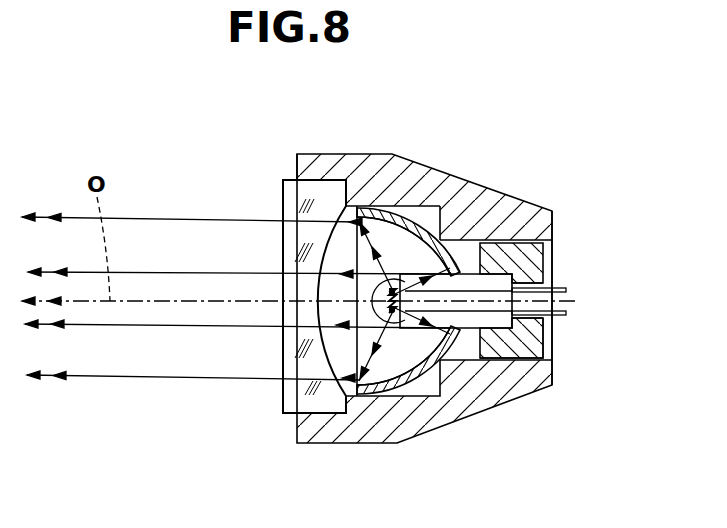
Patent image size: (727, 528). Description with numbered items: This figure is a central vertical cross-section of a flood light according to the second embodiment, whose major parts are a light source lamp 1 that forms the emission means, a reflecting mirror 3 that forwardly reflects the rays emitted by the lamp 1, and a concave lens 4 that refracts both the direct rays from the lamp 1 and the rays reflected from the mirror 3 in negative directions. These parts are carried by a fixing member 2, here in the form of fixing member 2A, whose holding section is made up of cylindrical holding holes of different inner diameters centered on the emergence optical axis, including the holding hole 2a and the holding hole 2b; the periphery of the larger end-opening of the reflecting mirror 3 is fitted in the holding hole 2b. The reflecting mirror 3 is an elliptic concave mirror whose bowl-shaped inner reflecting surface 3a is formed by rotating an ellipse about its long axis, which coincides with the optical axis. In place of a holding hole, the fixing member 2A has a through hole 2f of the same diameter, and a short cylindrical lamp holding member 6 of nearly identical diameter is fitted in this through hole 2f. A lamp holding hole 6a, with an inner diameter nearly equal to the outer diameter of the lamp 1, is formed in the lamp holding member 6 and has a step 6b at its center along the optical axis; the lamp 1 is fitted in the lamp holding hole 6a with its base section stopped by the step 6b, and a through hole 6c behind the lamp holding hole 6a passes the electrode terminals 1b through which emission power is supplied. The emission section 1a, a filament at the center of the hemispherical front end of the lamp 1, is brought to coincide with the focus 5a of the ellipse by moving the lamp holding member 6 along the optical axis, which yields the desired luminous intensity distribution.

The light source lamp 1 is at (480, 242).
The emission section 1a is at (345, 345).
The electrode terminals 1b is at (566, 290).
The fixing member 2 is at (458, 410).
The holding hole 2a is at (325, 180).
The holding hole 2b is at (406, 207).
The through hole 2f is at (468, 272).
The fixing member 2A is at (527, 220).
The reflecting mirror 3 is at (424, 238).
The reflecting surface 3a is at (390, 225).
The concave lens 4 is at (290, 195).
The focus 5a is at (395, 312).
The lamp holding member 6 is at (523, 261).
The lamp holding hole 6a is at (499, 345).
The step 6b is at (535, 345).
The through hole 6c is at (540, 320).